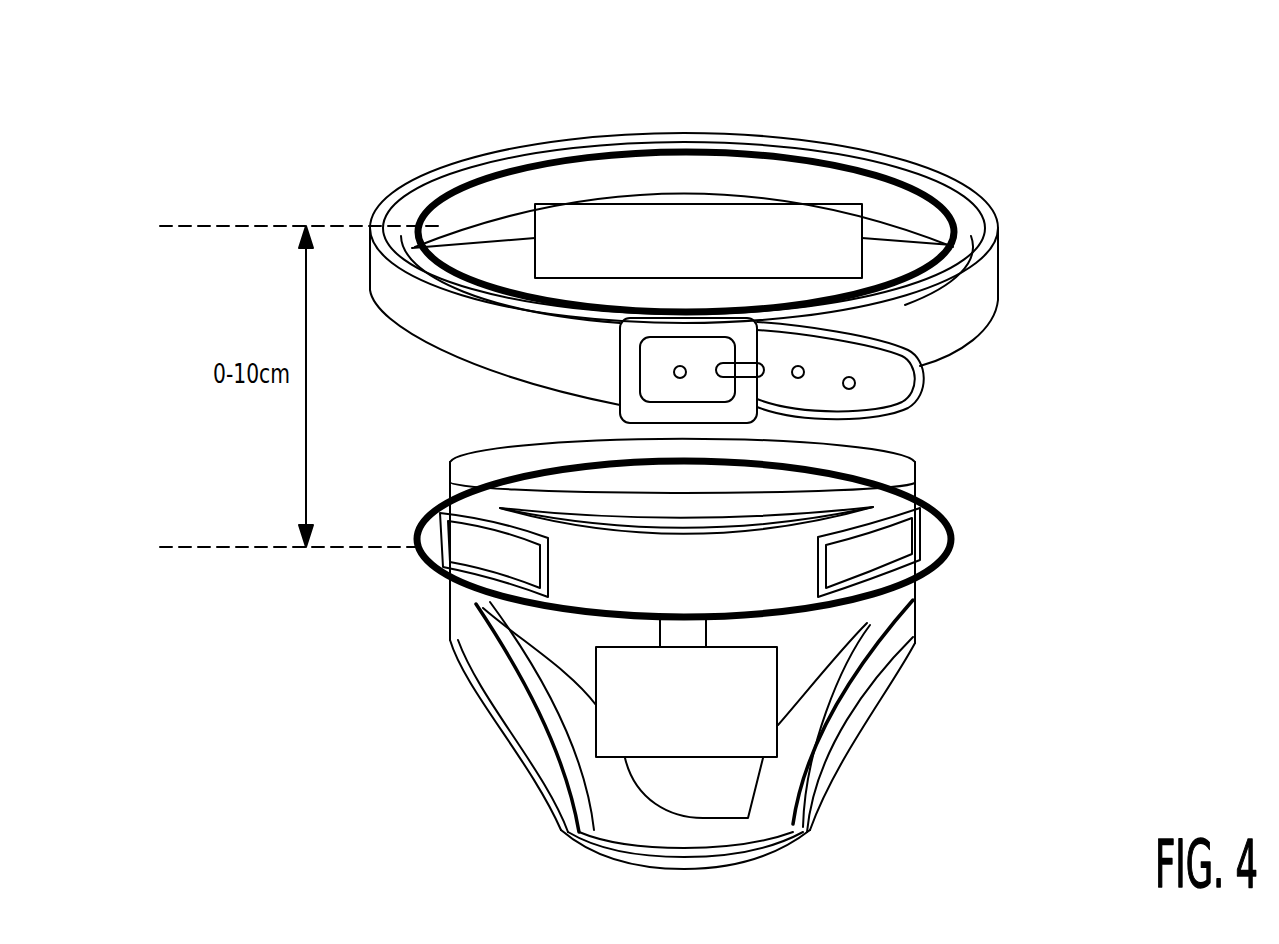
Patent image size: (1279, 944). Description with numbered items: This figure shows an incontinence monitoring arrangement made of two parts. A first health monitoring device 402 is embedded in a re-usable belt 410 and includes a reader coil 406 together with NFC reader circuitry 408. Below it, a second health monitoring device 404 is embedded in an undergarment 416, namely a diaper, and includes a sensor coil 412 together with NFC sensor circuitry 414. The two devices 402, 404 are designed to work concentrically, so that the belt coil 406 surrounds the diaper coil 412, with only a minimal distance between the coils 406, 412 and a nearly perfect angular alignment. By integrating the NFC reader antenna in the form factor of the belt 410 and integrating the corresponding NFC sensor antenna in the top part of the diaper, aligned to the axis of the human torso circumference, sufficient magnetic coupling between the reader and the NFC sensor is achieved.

The first health monitoring device 402 is at (1021, 151).
The second health monitoring device 404 is at (1021, 428).
The reader coil 406 is at (925, 190).
The NFC reader circuitry 408 is at (533, 240).
The re-usable belt 410 is at (800, 135).
The sensor coil 412 is at (432, 568).
The NFC sensor circuitry 414 is at (686, 688).
The undergarment 416 is at (877, 647).